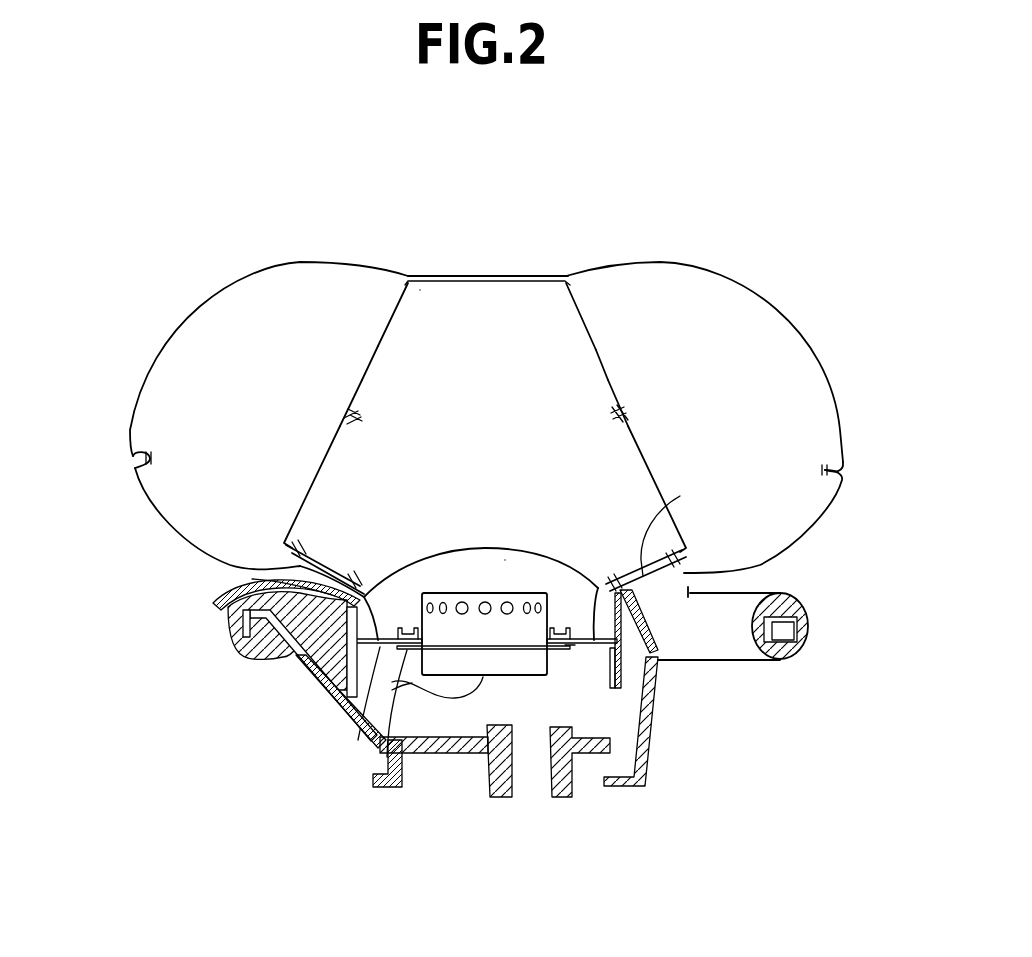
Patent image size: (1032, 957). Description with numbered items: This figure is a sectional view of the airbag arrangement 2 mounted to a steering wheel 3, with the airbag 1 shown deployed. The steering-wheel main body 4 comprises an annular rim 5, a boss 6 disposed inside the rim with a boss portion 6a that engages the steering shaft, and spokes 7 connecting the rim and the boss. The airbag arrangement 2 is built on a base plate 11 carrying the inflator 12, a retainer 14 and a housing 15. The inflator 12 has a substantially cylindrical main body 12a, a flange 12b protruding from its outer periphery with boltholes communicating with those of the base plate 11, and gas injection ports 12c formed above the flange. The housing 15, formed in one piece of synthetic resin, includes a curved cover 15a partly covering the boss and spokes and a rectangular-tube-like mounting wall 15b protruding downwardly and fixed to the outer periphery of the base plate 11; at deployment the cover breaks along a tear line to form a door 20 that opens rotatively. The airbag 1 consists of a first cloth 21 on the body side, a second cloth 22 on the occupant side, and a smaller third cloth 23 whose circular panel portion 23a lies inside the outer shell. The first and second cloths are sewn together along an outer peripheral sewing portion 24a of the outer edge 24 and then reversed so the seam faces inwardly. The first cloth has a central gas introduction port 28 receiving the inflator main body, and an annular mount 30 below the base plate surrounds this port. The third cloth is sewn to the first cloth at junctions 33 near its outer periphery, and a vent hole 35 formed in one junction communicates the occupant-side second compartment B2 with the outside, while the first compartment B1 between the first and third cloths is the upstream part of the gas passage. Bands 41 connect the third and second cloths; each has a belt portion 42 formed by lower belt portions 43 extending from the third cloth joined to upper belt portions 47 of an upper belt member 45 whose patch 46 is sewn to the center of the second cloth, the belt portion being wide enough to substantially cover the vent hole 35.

The airbag 1 is at (720, 275).
The airbag arrangement 2 is at (603, 692).
The steering wheel 3 is at (655, 796).
The steering-wheel main body 4 is at (456, 757).
The rim 5 is at (783, 661).
The boss 6 is at (592, 798).
The boss portion 6a is at (498, 798).
The spokes 7 is at (305, 672).
The base plate 11 is at (347, 708).
The inflator 12 is at (453, 640).
The main body 12a is at (453, 598).
The flange 12b is at (372, 768).
The gas injection ports 12c is at (506, 601).
The retainer 14 is at (410, 627).
The housing 15 is at (217, 596).
The cover 15a is at (647, 616).
The mounting wall 15b is at (623, 671).
The door 20 is at (252, 579).
The first cloth 21 is at (823, 508).
The second cloth 22 is at (842, 413).
The third cloth 23 is at (546, 562).
The panel portion 23a is at (573, 571).
The outer edge 24 is at (131, 464).
The outer peripheral sewing portion 24a is at (141, 454).
The gas introduction port 28 is at (553, 650).
The annular mount 30 is at (571, 649).
The junctions 33 is at (307, 546).
The vent hole 35 is at (678, 526).
The band 41 is at (352, 402).
The belt portion 42 is at (363, 369).
The lower belt portions 43 is at (320, 466).
The upper belt member 45 is at (545, 276).
The patch 46 is at (508, 278).
The upper belt portions 47 is at (385, 325).
The first compartment B1 is at (509, 565).
The second compartment B2 is at (447, 298).